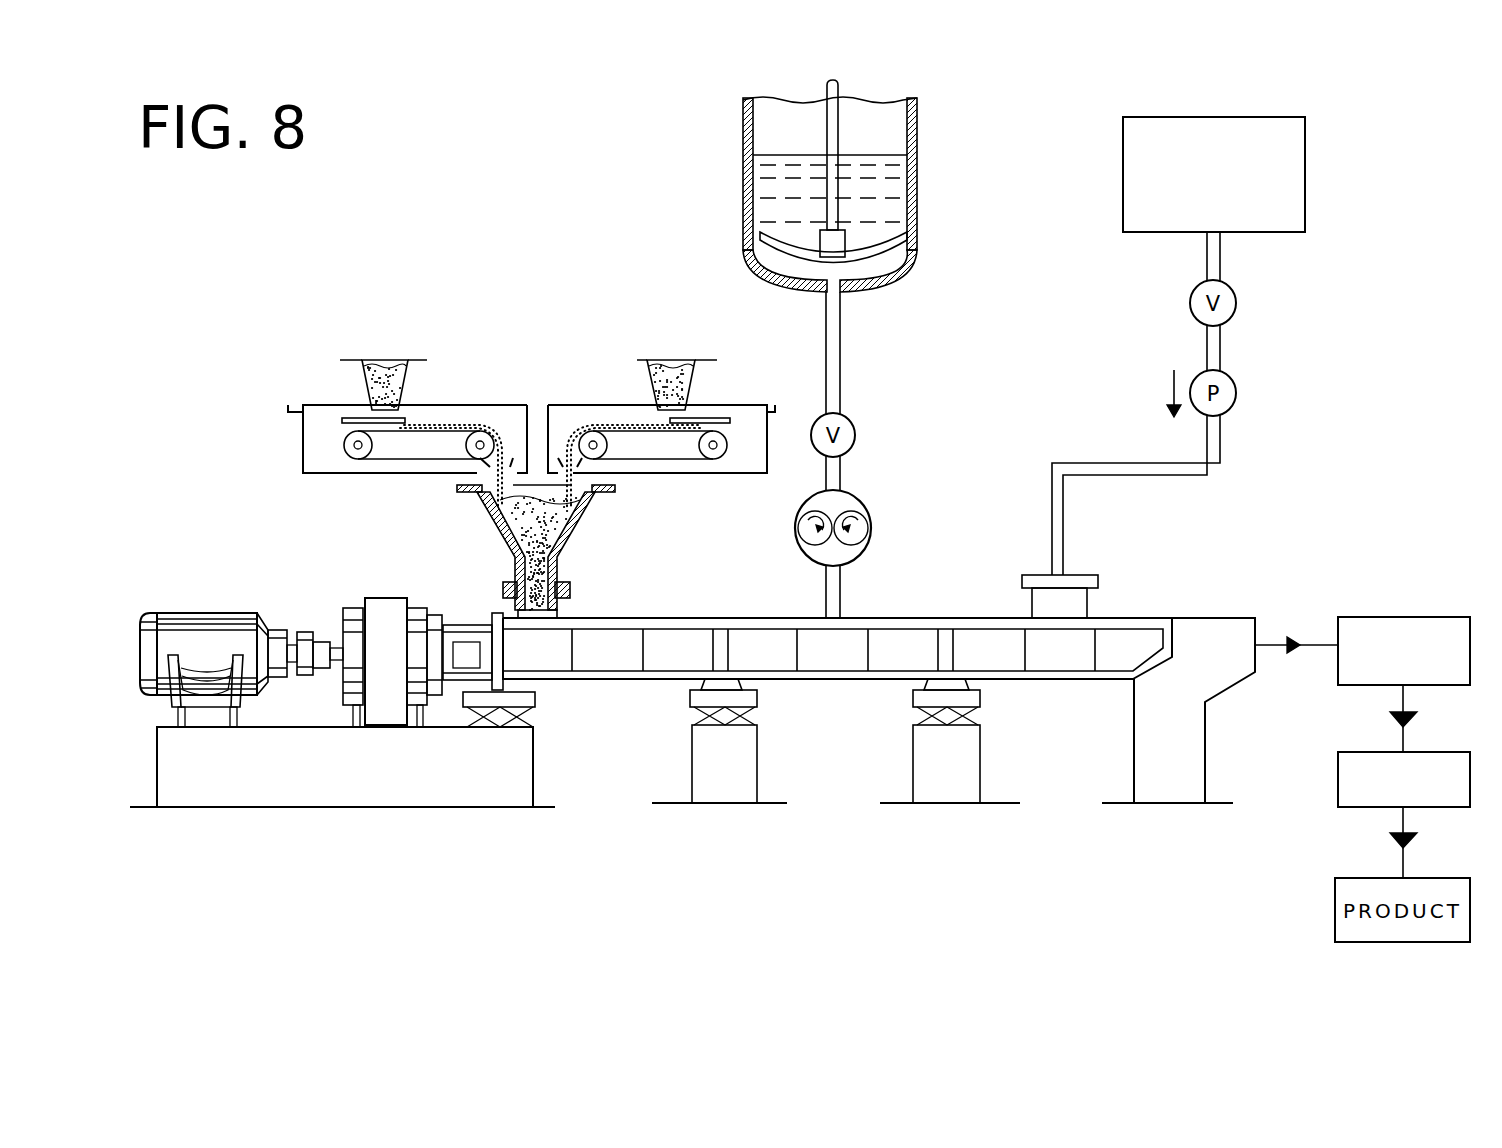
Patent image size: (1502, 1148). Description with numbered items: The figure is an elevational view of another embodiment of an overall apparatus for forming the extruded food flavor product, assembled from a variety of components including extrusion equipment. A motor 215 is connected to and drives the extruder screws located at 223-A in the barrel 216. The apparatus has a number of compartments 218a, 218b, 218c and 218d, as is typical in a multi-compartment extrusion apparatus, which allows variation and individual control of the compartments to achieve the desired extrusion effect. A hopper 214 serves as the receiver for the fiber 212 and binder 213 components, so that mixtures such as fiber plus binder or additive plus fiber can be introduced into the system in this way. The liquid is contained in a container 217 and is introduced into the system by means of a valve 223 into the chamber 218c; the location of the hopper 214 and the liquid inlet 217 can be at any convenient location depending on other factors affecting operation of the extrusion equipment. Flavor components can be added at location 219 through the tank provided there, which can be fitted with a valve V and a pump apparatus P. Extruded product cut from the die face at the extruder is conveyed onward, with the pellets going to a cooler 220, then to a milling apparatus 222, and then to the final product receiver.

The fiber 212 is at (390, 361).
The binder 213 is at (698, 337).
The hopper 214 is at (510, 548).
The motor 215 is at (187, 637).
The barrel 216 is at (595, 678).
The container 217 is at (917, 228).
The compartment 218a is at (668, 632).
The compartment 218b is at (764, 632).
The compartment 218c is at (825, 658).
The compartment 218d is at (888, 632).
The location for flavor components 219 is at (1285, 200).
The cooler 220 is at (1428, 625).
The milling apparatus 222 is at (1428, 762).
The valve 223 is at (847, 505).
The extruder screws location 223-A is at (380, 625).